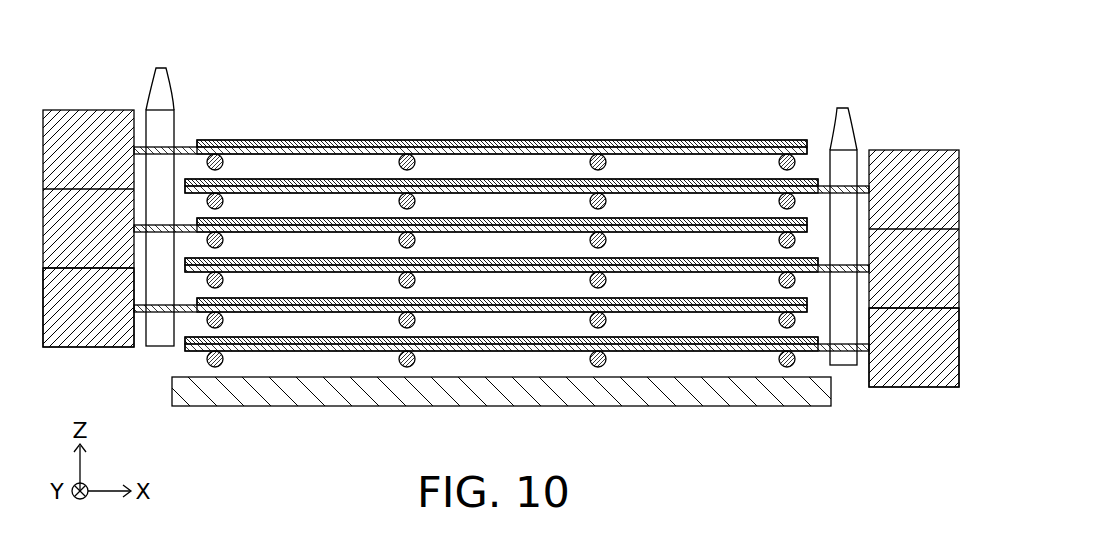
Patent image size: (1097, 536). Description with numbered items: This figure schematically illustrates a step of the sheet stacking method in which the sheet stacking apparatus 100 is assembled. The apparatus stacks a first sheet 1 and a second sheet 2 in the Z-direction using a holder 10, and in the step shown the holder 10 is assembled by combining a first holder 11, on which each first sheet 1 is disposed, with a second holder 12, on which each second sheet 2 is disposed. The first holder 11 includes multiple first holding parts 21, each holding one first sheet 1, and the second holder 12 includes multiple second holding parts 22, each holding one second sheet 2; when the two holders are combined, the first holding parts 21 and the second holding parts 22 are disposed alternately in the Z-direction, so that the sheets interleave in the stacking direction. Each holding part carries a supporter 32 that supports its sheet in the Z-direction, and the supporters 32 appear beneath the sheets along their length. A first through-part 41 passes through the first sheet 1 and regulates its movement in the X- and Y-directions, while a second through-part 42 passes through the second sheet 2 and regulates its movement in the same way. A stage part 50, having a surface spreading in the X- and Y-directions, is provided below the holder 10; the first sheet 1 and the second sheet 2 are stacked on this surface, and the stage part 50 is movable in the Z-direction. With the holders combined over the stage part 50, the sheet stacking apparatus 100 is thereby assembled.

The sheet stacking apparatus 100 is at (877, 50).
The holder 10 is at (505, 110).
The first sheet 1 is at (247, 139).
The second sheet 2 is at (737, 176).
The supporter 32 is at (405, 153).
The first holder 11 is at (91, 109).
The second holder 12 is at (915, 150).
The first holding part 21 is at (90, 335).
The second holding part 22 is at (916, 367).
The first through-part 41 is at (157, 90).
The second through-part 42 is at (843, 135).
The stage part 50 is at (505, 406).